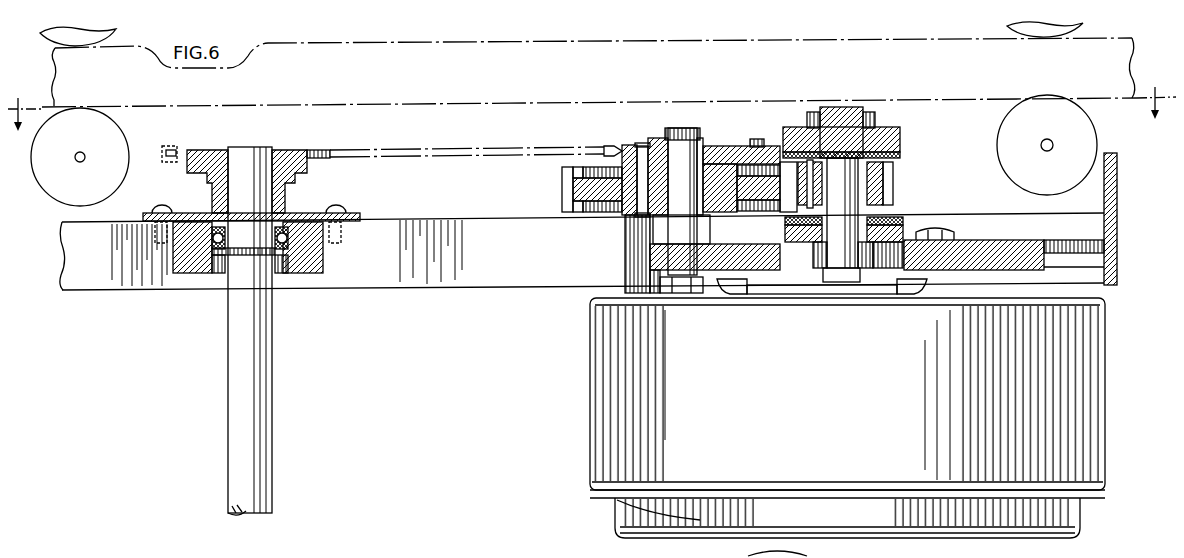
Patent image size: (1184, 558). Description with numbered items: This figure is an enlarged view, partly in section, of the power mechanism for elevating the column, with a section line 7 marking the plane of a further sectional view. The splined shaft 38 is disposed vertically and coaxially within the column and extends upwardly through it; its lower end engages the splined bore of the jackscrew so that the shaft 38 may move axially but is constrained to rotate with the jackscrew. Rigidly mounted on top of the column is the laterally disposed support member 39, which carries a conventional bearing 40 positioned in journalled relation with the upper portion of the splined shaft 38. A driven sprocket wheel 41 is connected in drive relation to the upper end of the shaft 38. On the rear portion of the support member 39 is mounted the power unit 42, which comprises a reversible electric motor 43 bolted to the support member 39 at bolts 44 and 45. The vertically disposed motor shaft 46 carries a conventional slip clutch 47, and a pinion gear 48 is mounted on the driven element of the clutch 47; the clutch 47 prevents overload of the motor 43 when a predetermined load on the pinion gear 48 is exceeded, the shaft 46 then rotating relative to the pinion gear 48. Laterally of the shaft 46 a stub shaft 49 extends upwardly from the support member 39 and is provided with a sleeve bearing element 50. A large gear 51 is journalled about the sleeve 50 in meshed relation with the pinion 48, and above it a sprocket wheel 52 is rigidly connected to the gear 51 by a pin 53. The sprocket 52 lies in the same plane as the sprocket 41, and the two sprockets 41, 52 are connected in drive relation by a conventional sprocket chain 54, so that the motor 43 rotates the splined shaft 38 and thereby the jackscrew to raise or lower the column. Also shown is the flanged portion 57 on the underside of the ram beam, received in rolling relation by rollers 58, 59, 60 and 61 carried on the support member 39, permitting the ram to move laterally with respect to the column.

The section line 7- 7 is at (592, 99).
The splined shaft 38 is at (231, 455).
The support member 39 is at (495, 266).
The bearing 40 is at (318, 209).
The driven sprocket wheel 41 is at (296, 151).
The power unit 42 is at (1113, 356).
The reversible electric motor 43 is at (866, 406).
The bolt 44 is at (742, 280).
The bolt 45 is at (957, 235).
The motor shaft 46 is at (856, 232).
The slip clutch 47 is at (908, 131).
The pinion gear 48 is at (878, 190).
The stub shaft 49 is at (650, 257).
The sleeve bearing element 50 is at (710, 145).
The large gear 51 is at (575, 166).
The sprocket wheel 52 is at (626, 144).
The pin 53 is at (641, 142).
The sprocket chain 54 is at (463, 156).
The flanged portion 57 is at (637, 83).
The roller 58 is at (53, 39).
The roller 59 is at (1082, 30).
The roller 60 is at (50, 181).
The roller 61 is at (1090, 141).